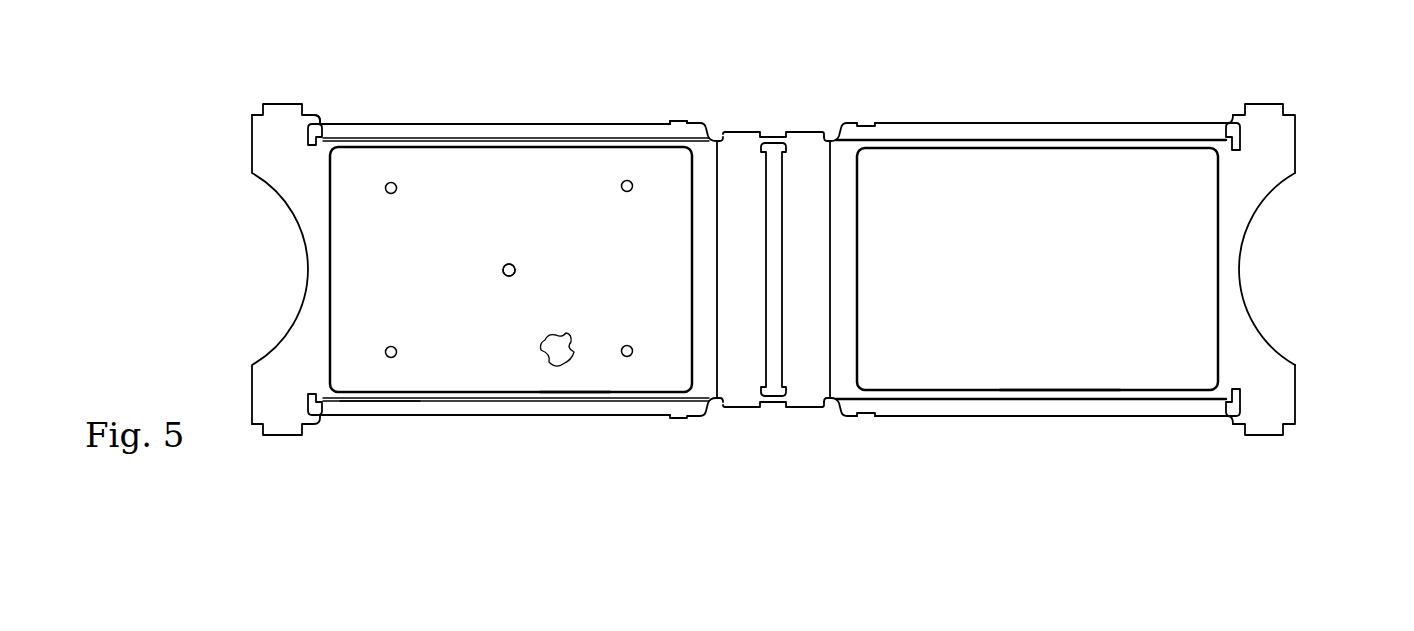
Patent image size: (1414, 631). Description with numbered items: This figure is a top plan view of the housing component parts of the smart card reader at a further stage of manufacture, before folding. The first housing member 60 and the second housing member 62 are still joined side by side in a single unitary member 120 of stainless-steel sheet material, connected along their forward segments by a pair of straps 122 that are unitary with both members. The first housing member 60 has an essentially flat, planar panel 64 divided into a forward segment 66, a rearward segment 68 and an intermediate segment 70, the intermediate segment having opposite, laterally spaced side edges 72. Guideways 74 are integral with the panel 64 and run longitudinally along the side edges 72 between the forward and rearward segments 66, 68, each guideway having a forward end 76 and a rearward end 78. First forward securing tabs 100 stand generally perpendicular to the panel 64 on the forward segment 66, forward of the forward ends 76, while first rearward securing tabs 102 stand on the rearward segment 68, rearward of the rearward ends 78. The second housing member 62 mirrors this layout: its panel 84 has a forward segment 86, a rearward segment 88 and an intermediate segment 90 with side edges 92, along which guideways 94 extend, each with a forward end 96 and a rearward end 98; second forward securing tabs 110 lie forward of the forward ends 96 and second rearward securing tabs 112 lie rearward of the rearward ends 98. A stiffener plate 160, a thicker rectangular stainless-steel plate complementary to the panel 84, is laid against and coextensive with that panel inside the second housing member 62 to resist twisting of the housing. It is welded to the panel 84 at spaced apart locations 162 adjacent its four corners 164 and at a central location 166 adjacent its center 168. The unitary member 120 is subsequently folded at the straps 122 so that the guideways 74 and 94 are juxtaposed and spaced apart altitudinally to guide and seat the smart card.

The first housing member 60 is at (920, 420).
The second housing member 62 is at (373, 408).
The panel 64 is at (1072, 357).
The forward segment 66 is at (808, 406).
The rearward segment 68 is at (1287, 153).
The intermediate segment 70 is at (1035, 180).
The side edges 72 is at (1080, 122).
The guideways 74 is at (993, 122).
The forward end 76 is at (878, 125).
The rearward end 78 is at (1230, 124).
The panel 84 is at (555, 355).
The forward segment 86 is at (735, 403).
The rearward segment 88 is at (258, 399).
The intermediate segment 90 is at (483, 165).
The side edges 92 is at (432, 123).
The guideways 94 is at (372, 123).
The forward end 96 is at (686, 118).
The rearward end 98 is at (322, 120).
The first forward securing tabs 100 is at (853, 121).
The first rearward securing tabs 102 is at (1268, 103).
The second forward securing tabs 110 is at (692, 122).
The second rearward securing tabs 112 is at (283, 103).
The unitary member 120 is at (604, 118).
The straps 122 is at (773, 141).
The stiffener plate 160 is at (570, 400).
The spaced apart locations 162 is at (386, 188).
The corners 164 is at (313, 150).
The central location 166 is at (509, 263).
The center 168 is at (510, 277).